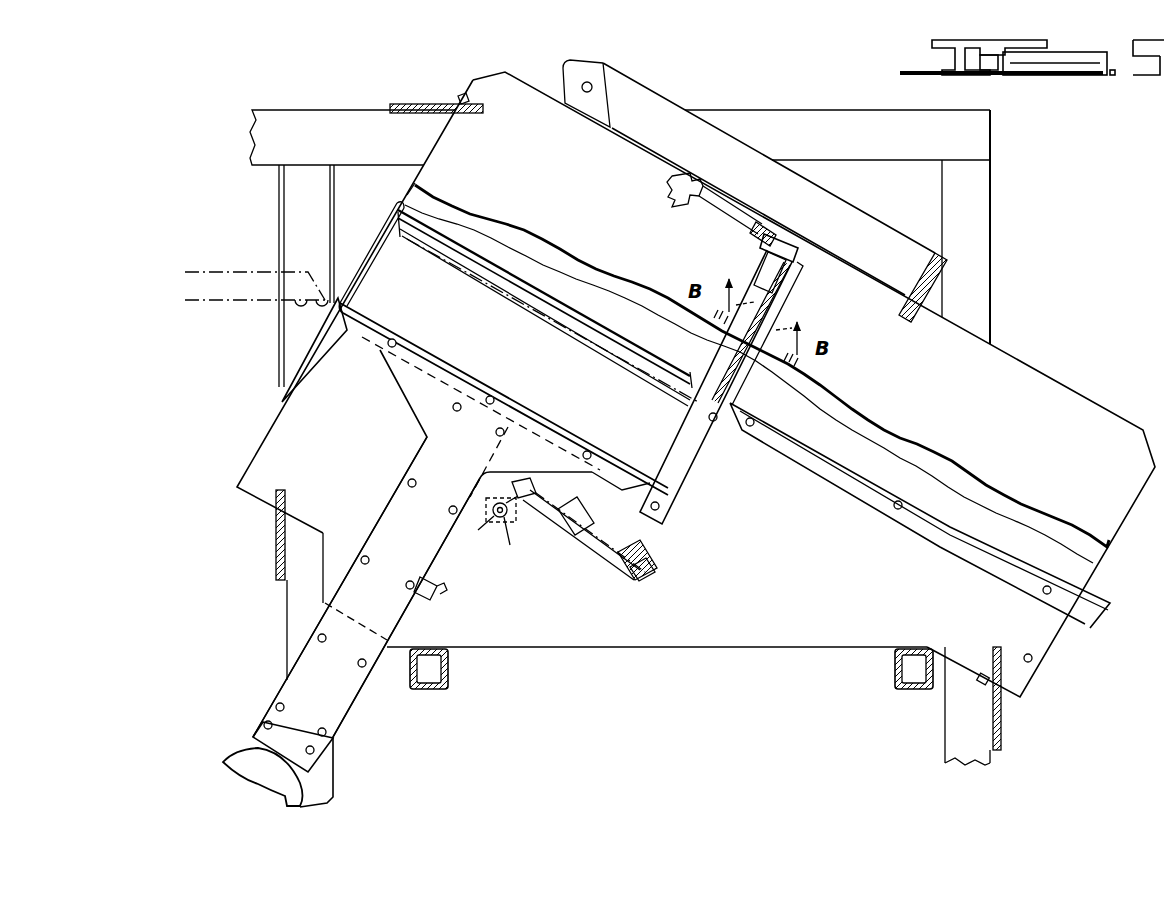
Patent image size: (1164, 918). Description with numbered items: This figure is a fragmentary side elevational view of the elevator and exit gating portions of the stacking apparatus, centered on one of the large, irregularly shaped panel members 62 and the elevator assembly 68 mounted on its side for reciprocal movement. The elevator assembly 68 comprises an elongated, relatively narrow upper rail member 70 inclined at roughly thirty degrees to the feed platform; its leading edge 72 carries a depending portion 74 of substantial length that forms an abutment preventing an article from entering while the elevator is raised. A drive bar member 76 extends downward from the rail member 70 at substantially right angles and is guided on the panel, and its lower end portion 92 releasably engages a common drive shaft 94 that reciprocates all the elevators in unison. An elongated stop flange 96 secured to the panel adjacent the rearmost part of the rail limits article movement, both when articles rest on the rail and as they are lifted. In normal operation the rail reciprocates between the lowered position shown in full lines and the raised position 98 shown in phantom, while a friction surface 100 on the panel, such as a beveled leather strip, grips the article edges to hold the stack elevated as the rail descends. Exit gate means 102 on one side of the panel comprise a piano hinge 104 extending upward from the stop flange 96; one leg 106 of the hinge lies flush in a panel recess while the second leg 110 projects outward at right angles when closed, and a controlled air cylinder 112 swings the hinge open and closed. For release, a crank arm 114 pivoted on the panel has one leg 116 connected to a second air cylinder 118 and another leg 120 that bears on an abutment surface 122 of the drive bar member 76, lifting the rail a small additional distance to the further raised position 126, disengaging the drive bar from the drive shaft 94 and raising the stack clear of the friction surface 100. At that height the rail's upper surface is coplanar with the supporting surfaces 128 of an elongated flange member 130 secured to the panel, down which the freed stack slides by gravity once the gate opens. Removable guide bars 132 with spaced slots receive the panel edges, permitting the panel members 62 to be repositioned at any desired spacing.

The panel member 62 is at (717, 630).
The elevator assembly 68 is at (380, 688).
The upper rail member 70 is at (427, 343).
The leading edge 72 is at (358, 288).
The depending portion 74 is at (308, 352).
The drive bar member 76 is at (420, 552).
The lower end portion 92 is at (255, 738).
The common drive shaft 94 is at (240, 768).
The stop flange 96 is at (687, 467).
The raised position 98 is at (547, 254).
The friction surface 100 is at (553, 318).
The exit gate means 102 is at (772, 226).
The piano hinge 104 is at (749, 295).
The first leg of piano hinge 106 is at (737, 333).
The second leg of piano hinge 110 is at (797, 275).
The air cylinder 112 is at (718, 208).
The crank arm 114 is at (510, 520).
The crank arm leg 116 is at (480, 490).
The air cylinder 118 is at (617, 550).
The other crank arm leg 120 is at (493, 523).
The abutment surface 122 is at (430, 591).
The further raised position 126 is at (492, 222).
The supporting surface 128 is at (848, 453).
The elongated flange member 130 is at (817, 462).
The guide bar 132 is at (415, 104).